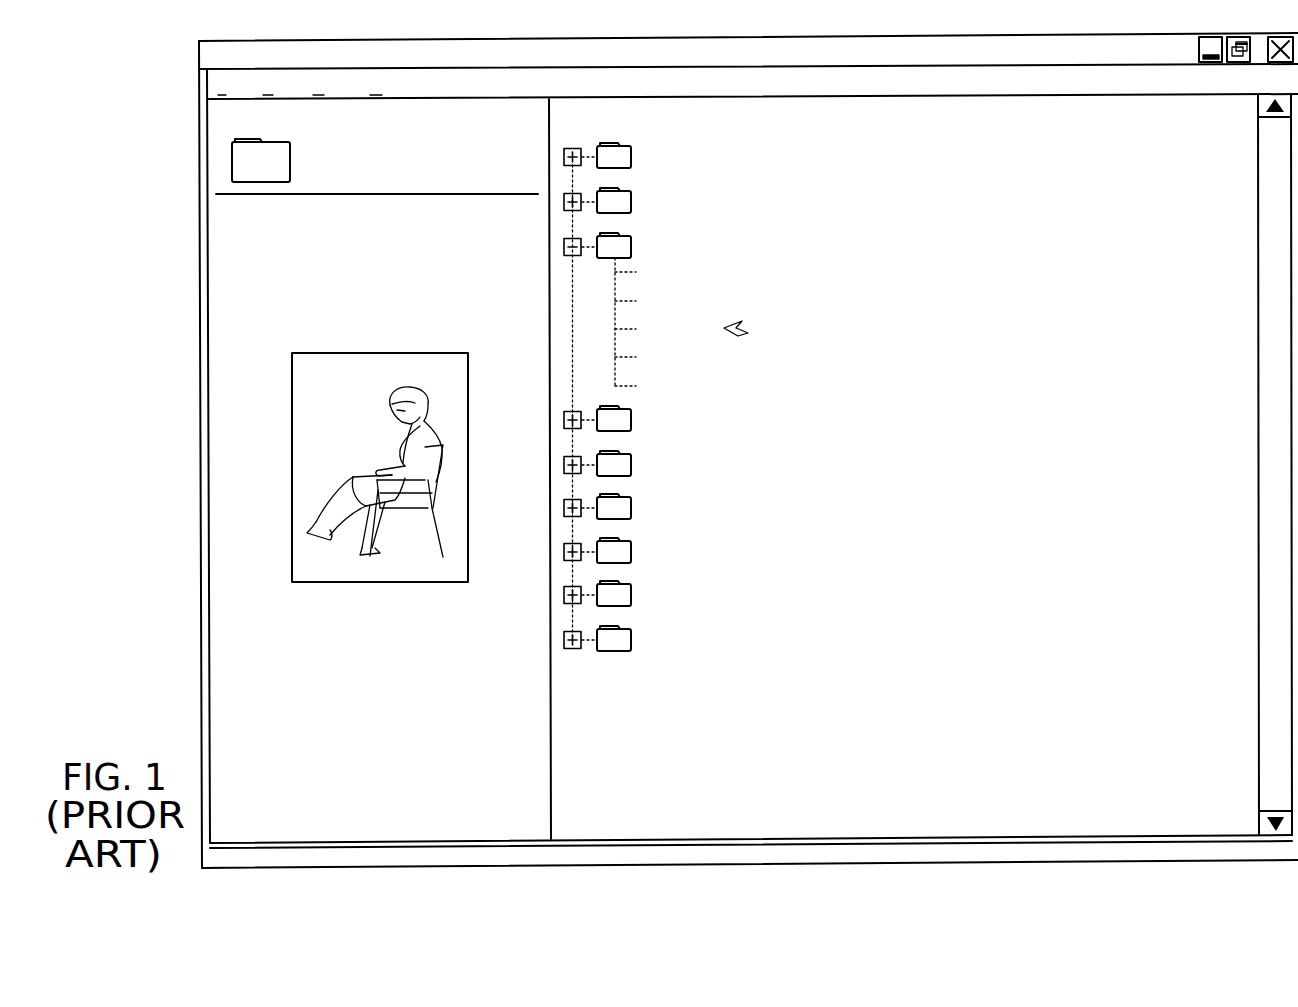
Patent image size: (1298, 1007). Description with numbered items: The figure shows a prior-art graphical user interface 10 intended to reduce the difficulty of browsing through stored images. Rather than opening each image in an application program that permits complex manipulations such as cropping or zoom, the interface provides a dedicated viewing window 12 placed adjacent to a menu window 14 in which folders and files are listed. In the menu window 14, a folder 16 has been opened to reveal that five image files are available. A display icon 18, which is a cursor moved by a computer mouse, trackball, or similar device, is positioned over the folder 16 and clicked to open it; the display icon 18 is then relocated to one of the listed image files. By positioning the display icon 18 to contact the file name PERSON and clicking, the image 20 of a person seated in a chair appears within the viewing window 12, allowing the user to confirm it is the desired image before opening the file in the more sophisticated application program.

The graphical user interface 10 is at (190, 638).
The viewing window 12 is at (213, 387).
The menu window 14 is at (940, 489).
The folder 16 is at (626, 248).
The display icon 18 is at (746, 333).
The image 20 is at (432, 568).